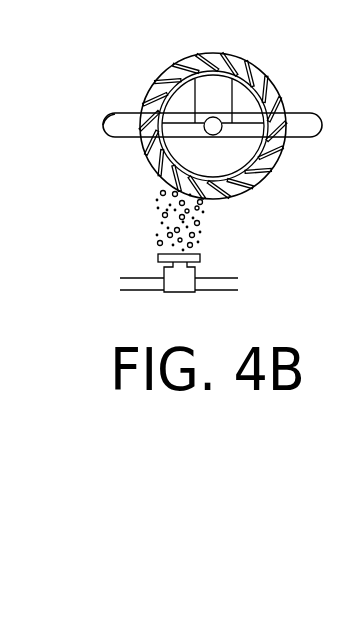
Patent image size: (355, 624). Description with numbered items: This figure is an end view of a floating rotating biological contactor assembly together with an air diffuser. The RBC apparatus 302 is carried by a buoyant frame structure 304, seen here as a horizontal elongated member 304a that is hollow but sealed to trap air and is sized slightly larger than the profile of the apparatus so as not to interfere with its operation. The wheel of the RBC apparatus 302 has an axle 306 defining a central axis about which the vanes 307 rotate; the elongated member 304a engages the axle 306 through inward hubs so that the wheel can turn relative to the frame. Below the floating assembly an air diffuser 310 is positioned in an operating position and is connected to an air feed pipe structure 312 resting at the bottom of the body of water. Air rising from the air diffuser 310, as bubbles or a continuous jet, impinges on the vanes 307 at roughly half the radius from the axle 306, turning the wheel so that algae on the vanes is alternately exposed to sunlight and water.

The RBC apparatus 302 is at (183, 59).
The frame structure 304 is at (128, 113).
The elongated member 304a is at (108, 117).
The axle 306 is at (219, 133).
The vanes 307 is at (148, 159).
The air diffuser 310 is at (160, 253).
The air feed pipe structure 312 is at (140, 286).